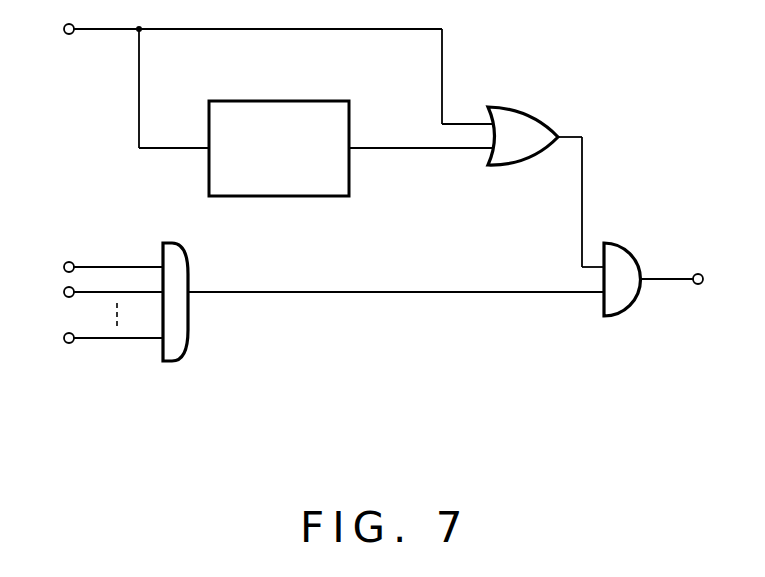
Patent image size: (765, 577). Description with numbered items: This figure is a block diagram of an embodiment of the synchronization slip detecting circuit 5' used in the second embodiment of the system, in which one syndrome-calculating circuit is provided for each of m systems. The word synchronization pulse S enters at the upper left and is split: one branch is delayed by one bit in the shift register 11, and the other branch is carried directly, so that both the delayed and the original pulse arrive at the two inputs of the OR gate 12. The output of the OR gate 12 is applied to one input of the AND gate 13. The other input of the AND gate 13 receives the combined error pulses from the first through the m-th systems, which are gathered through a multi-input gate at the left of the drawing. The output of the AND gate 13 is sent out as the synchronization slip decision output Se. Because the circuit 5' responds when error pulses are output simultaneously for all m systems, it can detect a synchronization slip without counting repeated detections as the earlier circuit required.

The synchronization slip detecting circuit 5' is at (368, 198).
The shift register 11 is at (268, 101).
The OR gate 12 is at (535, 112).
The AND gate 13 is at (621, 246).